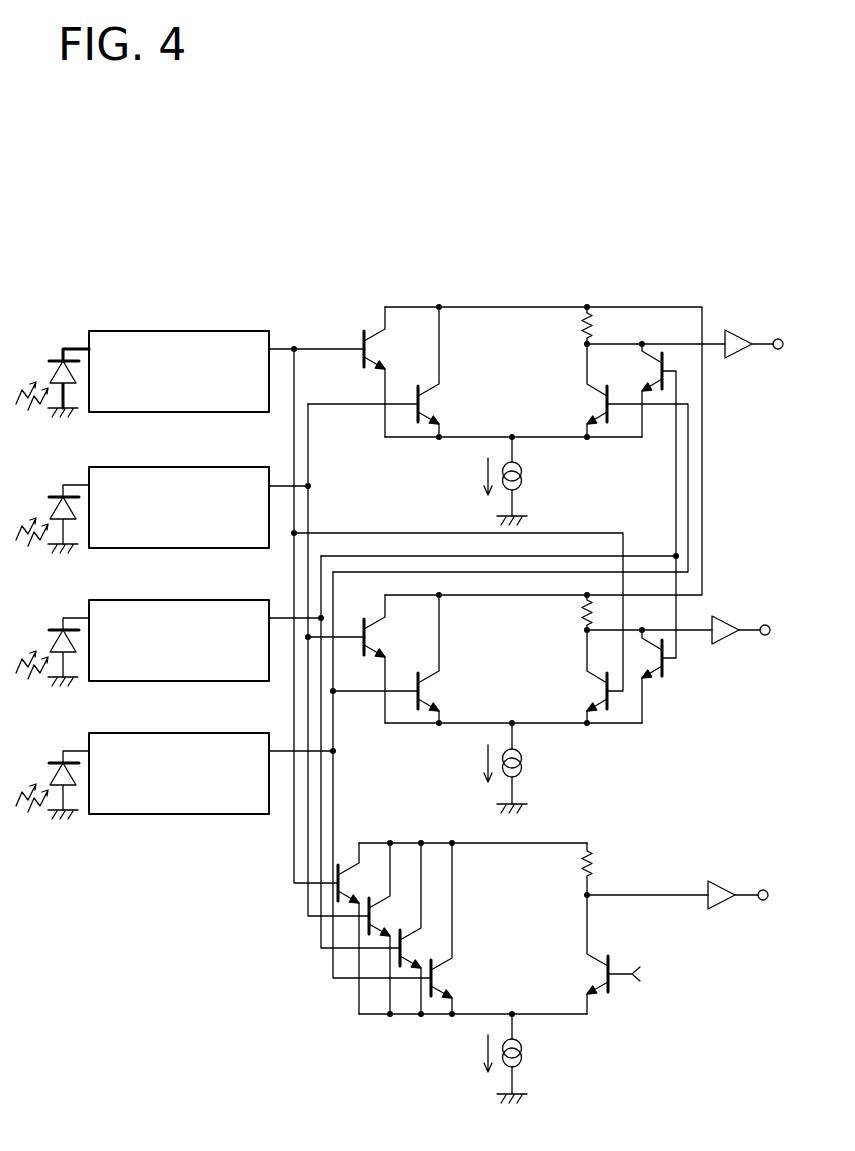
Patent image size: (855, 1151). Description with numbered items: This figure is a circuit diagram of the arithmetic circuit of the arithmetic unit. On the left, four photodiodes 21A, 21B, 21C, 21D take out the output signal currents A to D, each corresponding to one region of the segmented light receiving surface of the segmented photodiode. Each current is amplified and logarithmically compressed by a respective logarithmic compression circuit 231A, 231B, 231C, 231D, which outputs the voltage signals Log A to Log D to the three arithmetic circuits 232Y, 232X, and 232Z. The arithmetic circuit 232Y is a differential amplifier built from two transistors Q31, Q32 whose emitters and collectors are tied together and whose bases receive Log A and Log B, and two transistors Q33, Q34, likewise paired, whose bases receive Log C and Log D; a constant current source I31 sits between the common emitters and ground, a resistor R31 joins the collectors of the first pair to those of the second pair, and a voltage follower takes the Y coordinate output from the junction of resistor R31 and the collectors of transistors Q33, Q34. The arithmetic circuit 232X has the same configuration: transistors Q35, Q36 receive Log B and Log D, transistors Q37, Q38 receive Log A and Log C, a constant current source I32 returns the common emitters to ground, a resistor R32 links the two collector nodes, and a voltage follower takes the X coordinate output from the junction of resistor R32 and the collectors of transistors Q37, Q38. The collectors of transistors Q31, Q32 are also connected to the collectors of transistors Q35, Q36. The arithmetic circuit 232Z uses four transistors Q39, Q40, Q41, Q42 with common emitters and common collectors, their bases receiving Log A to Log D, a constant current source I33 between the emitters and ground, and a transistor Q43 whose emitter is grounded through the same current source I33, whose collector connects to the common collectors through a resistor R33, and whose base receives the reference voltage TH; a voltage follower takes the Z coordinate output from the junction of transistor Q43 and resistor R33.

The photodiode 21A is at (54, 352).
The photodiode 21B is at (54, 488).
The photodiode 21C is at (54, 621).
The photodiode 21D is at (54, 754).
The logarithmic compression circuit 231A is at (237, 330).
The logarithmic compression circuit 231B is at (237, 466).
The logarithmic compression circuit 231C is at (237, 599).
The logarithmic compression circuit 231D is at (237, 732).
The arithmetic circuit 232Y is at (708, 357).
The arithmetic circuit 232X is at (702, 646).
The arithmetic circuit 232Z is at (692, 936).
The transistor Q31 is at (368, 333).
The transistor Q32 is at (443, 403).
The transistor Q33 is at (656, 372).
The transistor Q34 is at (586, 403).
The transistor Q35 is at (368, 621).
The transistor Q36 is at (443, 690).
The transistor Q37 is at (654, 682).
The transistor Q38 is at (586, 690).
The transistor Q39 is at (346, 884).
The transistor Q40 is at (375, 916).
The transistor Q41 is at (406, 948).
The transistor Q42 is at (447, 989).
The transistor Q43 is at (586, 981).
The resistor R31 is at (598, 325).
The resistor R32 is at (580, 612).
The resistor R33 is at (599, 865).
The constant current source I31 is at (524, 478).
The constant current source I32 is at (524, 766).
The constant current source I33 is at (524, 1056).